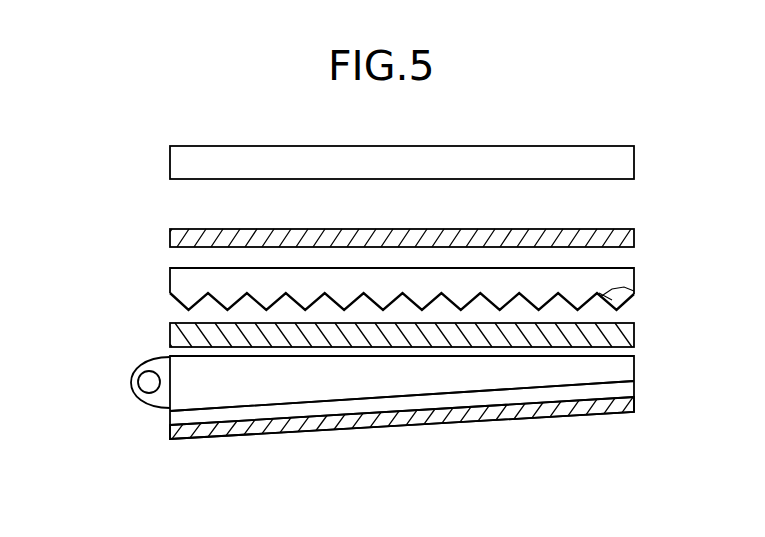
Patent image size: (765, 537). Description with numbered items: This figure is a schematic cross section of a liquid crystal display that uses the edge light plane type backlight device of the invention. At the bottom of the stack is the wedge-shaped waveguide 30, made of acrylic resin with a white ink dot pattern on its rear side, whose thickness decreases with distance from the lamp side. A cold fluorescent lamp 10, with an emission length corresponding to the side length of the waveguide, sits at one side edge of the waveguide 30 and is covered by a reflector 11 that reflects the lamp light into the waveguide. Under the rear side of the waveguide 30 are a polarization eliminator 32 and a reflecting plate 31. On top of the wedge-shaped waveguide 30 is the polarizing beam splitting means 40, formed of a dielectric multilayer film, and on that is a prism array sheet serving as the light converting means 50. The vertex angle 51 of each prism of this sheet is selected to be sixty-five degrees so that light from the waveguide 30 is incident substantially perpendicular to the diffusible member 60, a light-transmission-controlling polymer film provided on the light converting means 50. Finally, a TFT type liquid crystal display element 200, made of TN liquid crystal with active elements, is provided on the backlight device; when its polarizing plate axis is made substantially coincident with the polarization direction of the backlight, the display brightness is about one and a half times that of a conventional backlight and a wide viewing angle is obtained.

The liquid crystal display element 200 is at (169, 164).
The diffusible member 60 is at (169, 238).
The light converting means 50 is at (622, 269).
The vertex angle 51 is at (634, 289).
The polarizing beam splitting means 40 is at (634, 331).
The cold fluorescent lamp 10 is at (149, 371).
The reflector 11 is at (128, 383).
The wedge-shaped waveguide 30 is at (213, 400).
The polarization eliminator 32 is at (312, 412).
The reflecting plate 31 is at (387, 417).